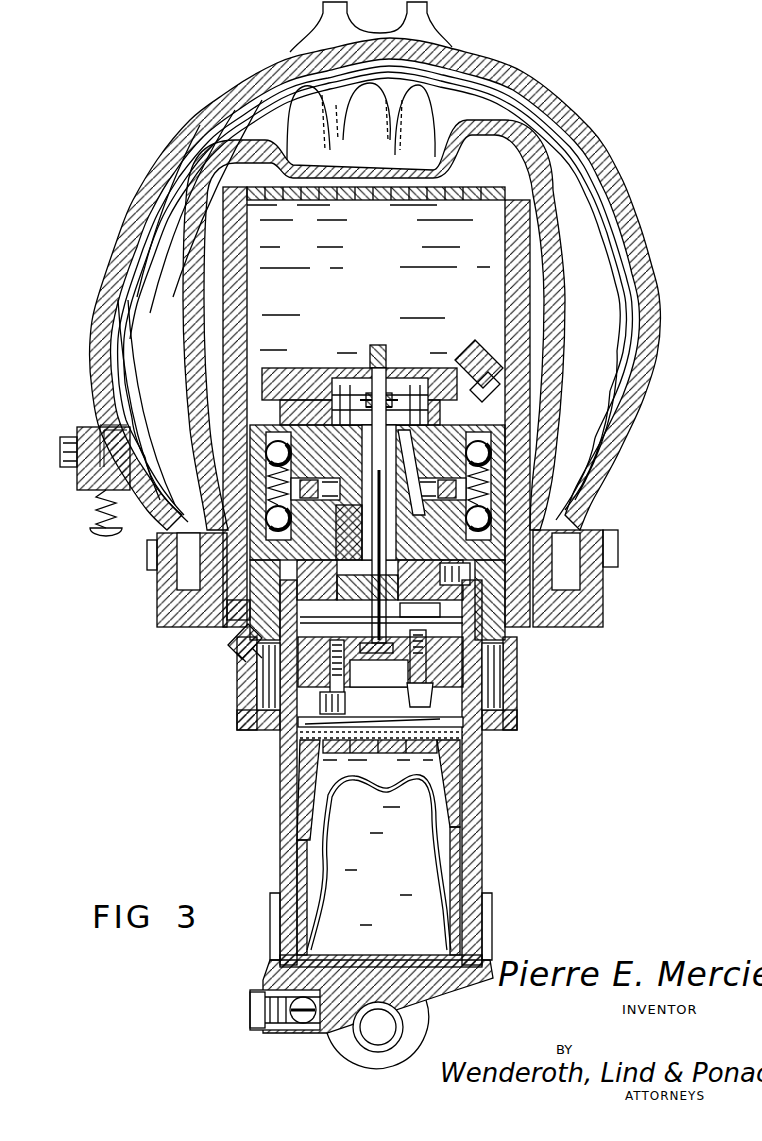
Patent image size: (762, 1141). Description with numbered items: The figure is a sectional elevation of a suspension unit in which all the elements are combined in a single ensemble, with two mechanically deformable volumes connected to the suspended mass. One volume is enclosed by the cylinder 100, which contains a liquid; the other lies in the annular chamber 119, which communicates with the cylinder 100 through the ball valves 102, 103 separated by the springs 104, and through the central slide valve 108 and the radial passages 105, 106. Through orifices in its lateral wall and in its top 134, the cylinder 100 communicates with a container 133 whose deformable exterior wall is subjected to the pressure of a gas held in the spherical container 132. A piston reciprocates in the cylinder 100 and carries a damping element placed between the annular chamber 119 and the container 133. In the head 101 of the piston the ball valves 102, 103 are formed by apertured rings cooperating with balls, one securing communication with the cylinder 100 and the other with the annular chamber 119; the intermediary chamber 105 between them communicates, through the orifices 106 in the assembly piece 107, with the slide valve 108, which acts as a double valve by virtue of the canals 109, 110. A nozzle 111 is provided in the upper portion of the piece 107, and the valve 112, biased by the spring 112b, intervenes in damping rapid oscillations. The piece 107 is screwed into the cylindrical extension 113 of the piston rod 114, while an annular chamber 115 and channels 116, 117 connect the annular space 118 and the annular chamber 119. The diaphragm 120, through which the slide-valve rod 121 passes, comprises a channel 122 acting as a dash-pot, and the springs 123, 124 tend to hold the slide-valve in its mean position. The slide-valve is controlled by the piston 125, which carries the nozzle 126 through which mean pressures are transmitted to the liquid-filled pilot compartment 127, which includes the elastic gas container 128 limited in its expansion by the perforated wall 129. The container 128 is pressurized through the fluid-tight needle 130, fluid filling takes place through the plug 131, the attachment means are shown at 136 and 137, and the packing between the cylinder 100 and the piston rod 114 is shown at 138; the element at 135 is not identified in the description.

The cylinder 100 is at (505, 283).
The head of the piston 101 is at (491, 455).
The ball valve 102 is at (487, 460).
The ball valve 103 is at (489, 527).
The springs 104 is at (485, 483).
The intermediary chamber 105 is at (271, 508).
The orifices 106 is at (313, 503).
The assembly piece 107 is at (333, 420).
The central slide valve 108 is at (487, 447).
The canal 109 is at (392, 470).
The canal 110 is at (340, 530).
The nozzle 111 is at (470, 360).
The valve 112 is at (327, 385).
The spring 112b is at (377, 405).
The cylindrical extension of the piston rod 113 is at (433, 607).
The piston rod 114 is at (480, 767).
The annular chamber 115 is at (427, 613).
The channel 116 is at (422, 590).
The channel 117 is at (477, 573).
The annular space 118 is at (350, 560).
The annular chamber 119 is at (250, 627).
The diaphragm 120 is at (458, 636).
The slide-valve rod 121 is at (383, 643).
The channel 122 is at (450, 685).
The spring 123 is at (265, 686).
The spring 124 is at (323, 730).
The piston 125 is at (310, 700).
The nozzle 126 is at (345, 708).
The pilot compartment 127 is at (303, 753).
The elastic gas container 128 is at (328, 830).
The perforated wall 129 is at (463, 827).
The fluid-tight needle 130 is at (253, 1009).
The plug 131 is at (248, 640).
The spherical container 132 is at (193, 113).
The container 133 is at (530, 140).
The top 134 is at (460, 193).
The valve fitting 135 is at (60, 444).
The attachment means 136 is at (403, 1017).
The attachment means 137 is at (327, 9).
The fluid-tight packing 138 is at (283, 703).